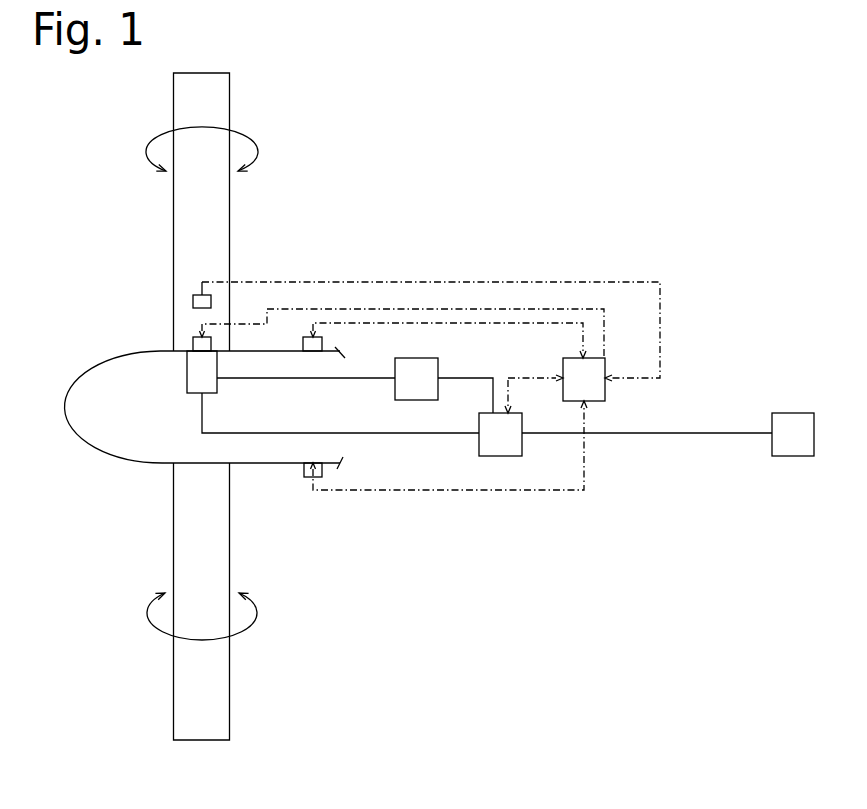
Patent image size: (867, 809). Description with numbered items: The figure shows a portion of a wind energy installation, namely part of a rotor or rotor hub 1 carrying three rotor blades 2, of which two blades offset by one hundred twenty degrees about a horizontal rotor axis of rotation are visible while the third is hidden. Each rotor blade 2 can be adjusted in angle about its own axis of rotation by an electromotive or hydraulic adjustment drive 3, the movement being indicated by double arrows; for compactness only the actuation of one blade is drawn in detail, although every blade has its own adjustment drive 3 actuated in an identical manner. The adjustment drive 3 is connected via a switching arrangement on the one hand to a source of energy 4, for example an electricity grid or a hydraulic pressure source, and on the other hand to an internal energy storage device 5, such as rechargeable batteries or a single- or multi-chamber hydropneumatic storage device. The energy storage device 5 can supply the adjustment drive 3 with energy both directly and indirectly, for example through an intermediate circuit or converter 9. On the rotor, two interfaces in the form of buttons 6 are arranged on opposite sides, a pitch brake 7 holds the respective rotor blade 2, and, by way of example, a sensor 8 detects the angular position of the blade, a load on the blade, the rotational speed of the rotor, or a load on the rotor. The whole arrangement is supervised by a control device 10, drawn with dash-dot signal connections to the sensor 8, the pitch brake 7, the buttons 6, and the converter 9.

The rotor hub 1 is at (62, 407).
The rotor blade 2 is at (230, 103).
The adjustment drive 3 is at (187, 372).
The source of energy 4 is at (785, 448).
The internal energy storage device 5 is at (409, 393).
The buttons 6 is at (337, 343).
The pitch brake 7 is at (192, 347).
The sensor 8 is at (212, 302).
The converter 9 is at (492, 448).
The control device 10 is at (570, 393).